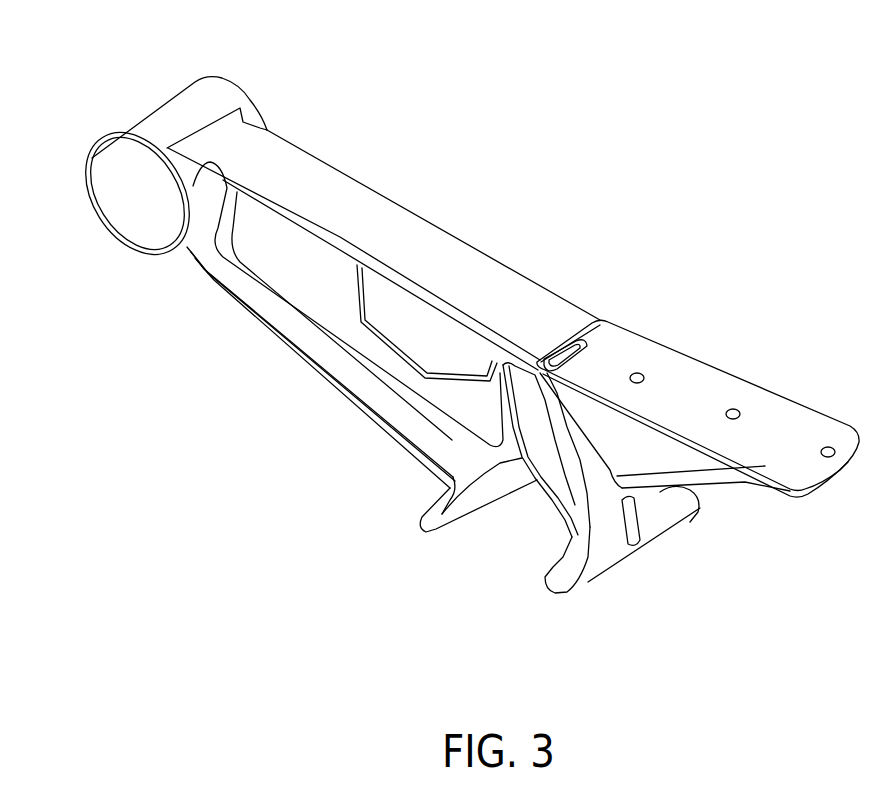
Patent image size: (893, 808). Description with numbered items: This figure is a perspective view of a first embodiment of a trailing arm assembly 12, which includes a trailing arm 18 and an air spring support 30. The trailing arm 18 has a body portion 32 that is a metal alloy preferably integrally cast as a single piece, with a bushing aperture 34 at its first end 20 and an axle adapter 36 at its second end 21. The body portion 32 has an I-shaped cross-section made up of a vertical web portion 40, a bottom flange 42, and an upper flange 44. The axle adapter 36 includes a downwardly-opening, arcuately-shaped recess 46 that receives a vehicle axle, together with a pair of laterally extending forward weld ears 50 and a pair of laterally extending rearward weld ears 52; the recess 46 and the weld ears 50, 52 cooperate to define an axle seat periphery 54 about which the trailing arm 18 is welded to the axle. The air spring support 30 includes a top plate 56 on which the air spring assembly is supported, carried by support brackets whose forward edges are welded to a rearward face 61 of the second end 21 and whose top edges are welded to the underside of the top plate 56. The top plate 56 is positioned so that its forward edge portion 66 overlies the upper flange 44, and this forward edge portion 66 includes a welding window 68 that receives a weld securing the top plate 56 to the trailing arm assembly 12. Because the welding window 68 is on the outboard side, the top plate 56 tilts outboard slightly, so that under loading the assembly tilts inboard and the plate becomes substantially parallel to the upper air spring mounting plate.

The trailing arm assembly 12 is at (508, 185).
The trailing arm 18 is at (457, 228).
The first end 20 is at (205, 275).
The second end 21 is at (407, 450).
The air spring support 30 is at (710, 353).
The body portion 32 is at (420, 212).
The bushing aperture 34 is at (133, 213).
The axle adapter 36 is at (640, 566).
The vertical web portion 40 is at (270, 290).
The bottom flange 42 is at (287, 332).
The upper flange 44 is at (327, 175).
The arcuately-shaped recess 46 is at (477, 500).
The forward weld ears 50 is at (428, 530).
The rearward weld ears 52 is at (560, 575).
The axle seat periphery 54 is at (544, 494).
The top plate 56 is at (783, 417).
The rearward face 61 is at (713, 487).
The forward edge portion 66 is at (612, 333).
The welding window 68 is at (556, 343).